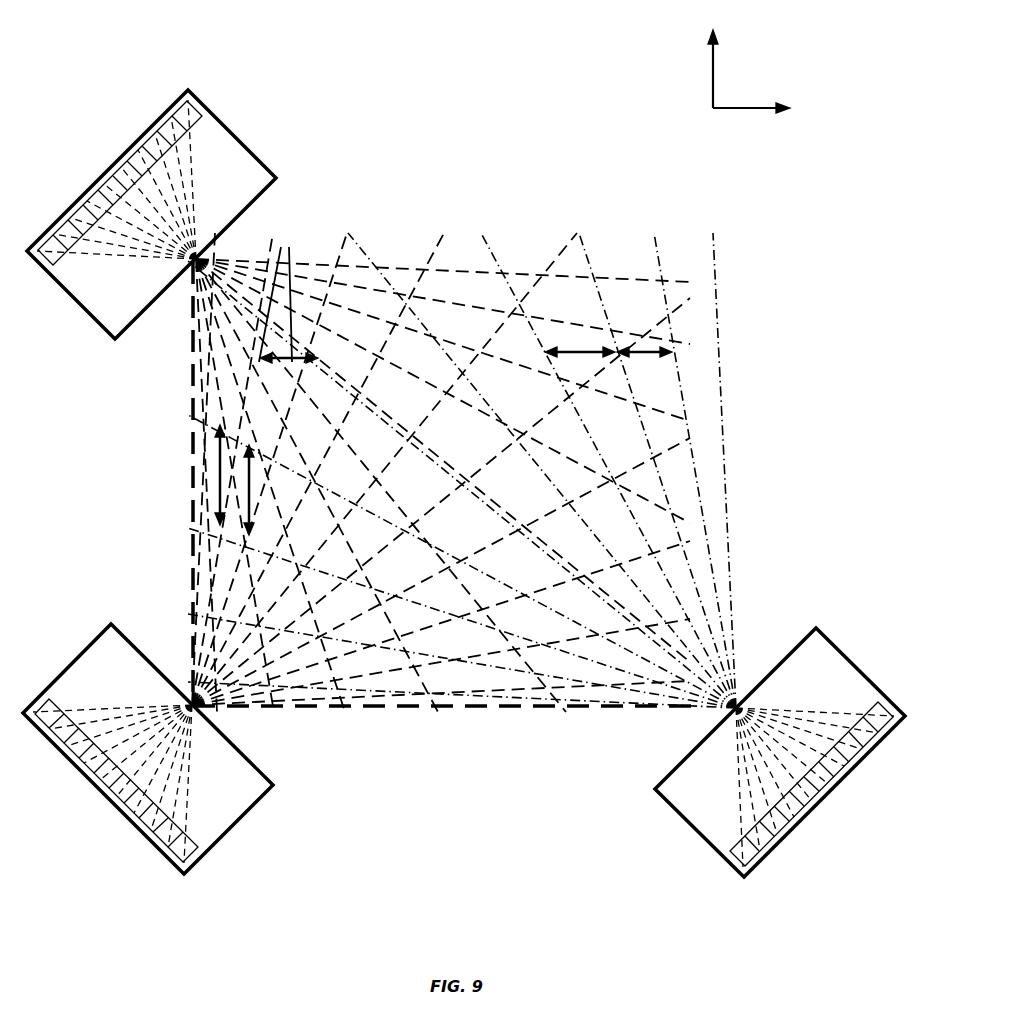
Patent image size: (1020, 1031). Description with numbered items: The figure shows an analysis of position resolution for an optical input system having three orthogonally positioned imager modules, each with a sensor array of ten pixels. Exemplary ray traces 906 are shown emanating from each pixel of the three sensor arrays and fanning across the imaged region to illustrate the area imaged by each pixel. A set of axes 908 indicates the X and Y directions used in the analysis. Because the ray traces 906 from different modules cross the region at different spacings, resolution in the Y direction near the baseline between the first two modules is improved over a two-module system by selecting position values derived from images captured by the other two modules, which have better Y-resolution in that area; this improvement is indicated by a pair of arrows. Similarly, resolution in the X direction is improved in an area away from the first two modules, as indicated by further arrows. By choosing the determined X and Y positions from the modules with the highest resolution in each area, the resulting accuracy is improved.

The ray traces 906 is at (443, 250).
The axes 908 is at (730, 110).